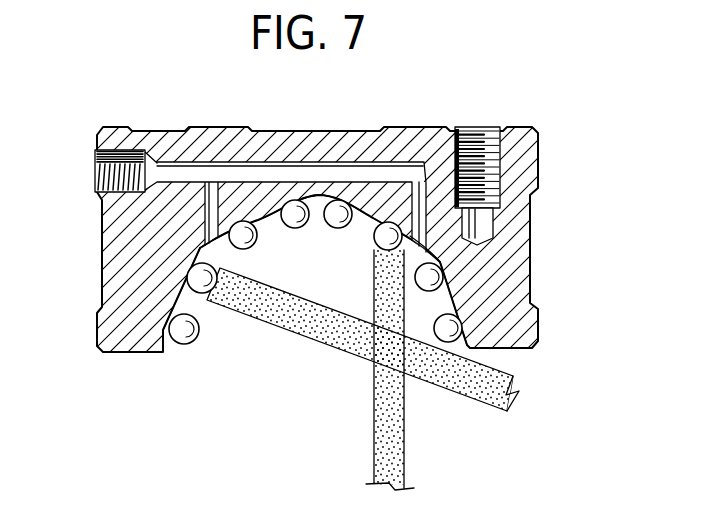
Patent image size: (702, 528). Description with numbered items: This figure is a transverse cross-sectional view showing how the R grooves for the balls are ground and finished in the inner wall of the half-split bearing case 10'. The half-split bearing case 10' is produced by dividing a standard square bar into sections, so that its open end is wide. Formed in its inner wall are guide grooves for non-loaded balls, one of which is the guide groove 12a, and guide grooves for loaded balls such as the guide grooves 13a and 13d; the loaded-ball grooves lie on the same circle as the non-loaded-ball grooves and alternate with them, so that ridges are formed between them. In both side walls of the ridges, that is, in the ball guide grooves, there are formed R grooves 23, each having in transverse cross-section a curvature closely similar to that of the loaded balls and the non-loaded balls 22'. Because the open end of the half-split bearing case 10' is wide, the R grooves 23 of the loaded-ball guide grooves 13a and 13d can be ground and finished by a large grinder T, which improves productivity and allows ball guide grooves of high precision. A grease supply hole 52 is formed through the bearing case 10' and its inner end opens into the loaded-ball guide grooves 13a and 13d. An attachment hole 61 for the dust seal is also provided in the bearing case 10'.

The half-split bearing case 10' is at (351, 211).
The grease supply hole 52 is at (95, 165).
The attachment hole 61 is at (478, 127).
The R groove 23 is at (256, 237).
The guide groove for non-loaded balls 12a is at (318, 200).
The guide groove for loaded balls 13d is at (208, 255).
The guide groove for loaded balls 13a is at (398, 252).
The non-loaded ball 22' is at (346, 359).
The large grinder T is at (386, 428).